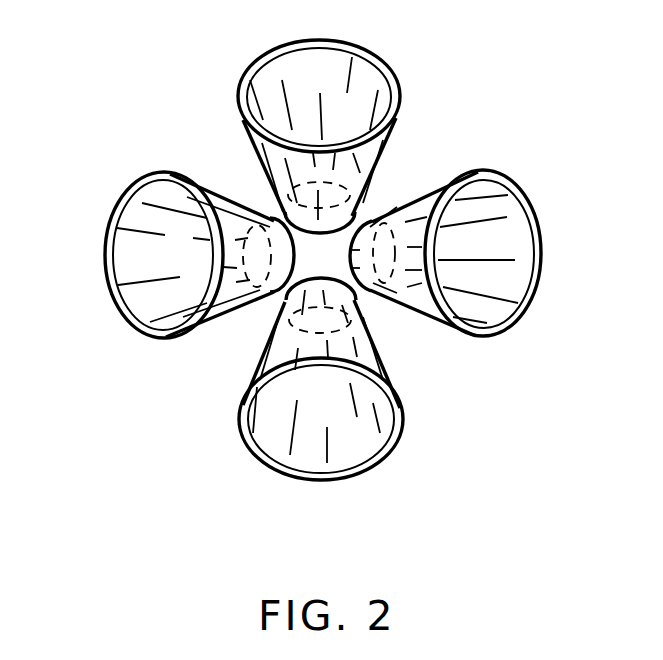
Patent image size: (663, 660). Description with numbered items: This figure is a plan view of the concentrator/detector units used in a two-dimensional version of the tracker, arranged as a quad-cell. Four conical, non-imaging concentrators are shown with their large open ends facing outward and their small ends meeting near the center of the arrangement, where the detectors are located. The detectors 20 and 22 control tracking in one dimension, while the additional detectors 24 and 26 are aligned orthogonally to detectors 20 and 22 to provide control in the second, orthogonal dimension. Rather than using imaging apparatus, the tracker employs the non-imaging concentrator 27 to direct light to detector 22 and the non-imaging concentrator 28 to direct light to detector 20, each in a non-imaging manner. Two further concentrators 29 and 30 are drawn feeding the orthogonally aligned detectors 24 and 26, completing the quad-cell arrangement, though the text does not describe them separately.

The detector 20 is at (371, 293).
The detector 22 is at (271, 222).
The additional detector 24 is at (289, 302).
The additional detector 26 is at (340, 202).
The non-imaging concentrator 27 is at (524, 302).
The non-imaging concentrator 28 is at (120, 312).
The bottom conical horn 29 is at (380, 462).
The top conical horn 30 is at (402, 107).